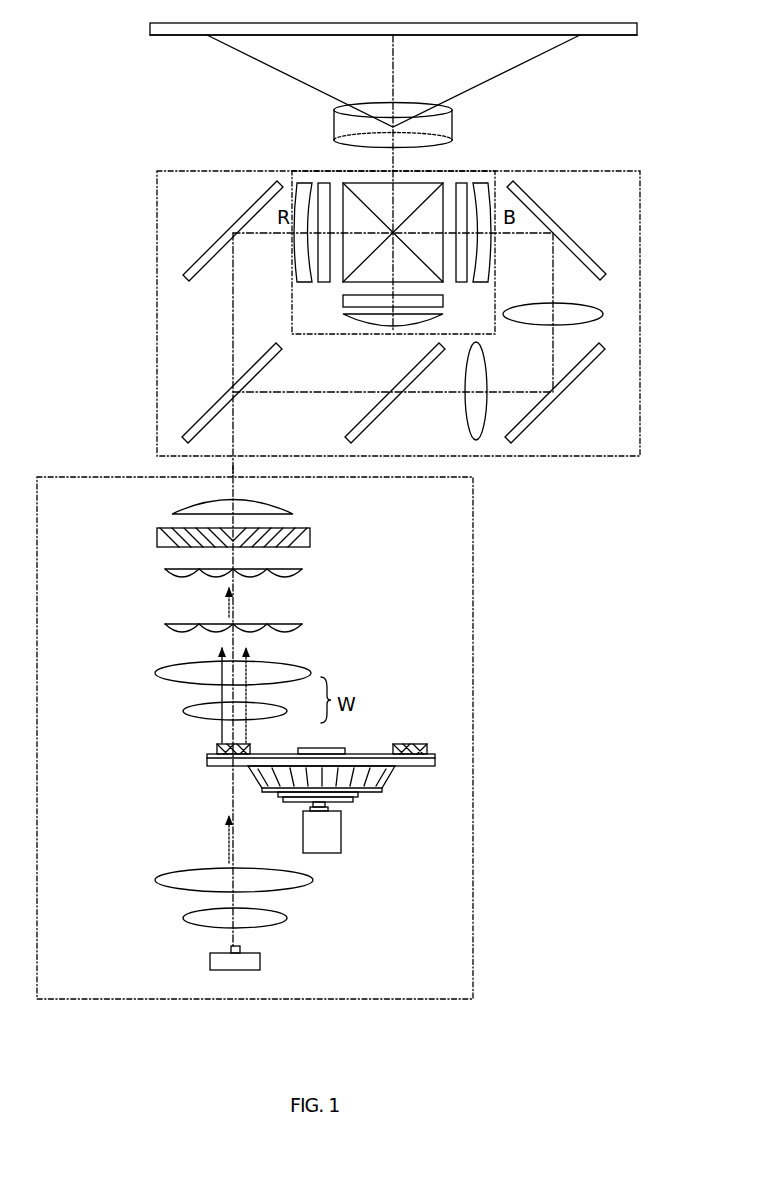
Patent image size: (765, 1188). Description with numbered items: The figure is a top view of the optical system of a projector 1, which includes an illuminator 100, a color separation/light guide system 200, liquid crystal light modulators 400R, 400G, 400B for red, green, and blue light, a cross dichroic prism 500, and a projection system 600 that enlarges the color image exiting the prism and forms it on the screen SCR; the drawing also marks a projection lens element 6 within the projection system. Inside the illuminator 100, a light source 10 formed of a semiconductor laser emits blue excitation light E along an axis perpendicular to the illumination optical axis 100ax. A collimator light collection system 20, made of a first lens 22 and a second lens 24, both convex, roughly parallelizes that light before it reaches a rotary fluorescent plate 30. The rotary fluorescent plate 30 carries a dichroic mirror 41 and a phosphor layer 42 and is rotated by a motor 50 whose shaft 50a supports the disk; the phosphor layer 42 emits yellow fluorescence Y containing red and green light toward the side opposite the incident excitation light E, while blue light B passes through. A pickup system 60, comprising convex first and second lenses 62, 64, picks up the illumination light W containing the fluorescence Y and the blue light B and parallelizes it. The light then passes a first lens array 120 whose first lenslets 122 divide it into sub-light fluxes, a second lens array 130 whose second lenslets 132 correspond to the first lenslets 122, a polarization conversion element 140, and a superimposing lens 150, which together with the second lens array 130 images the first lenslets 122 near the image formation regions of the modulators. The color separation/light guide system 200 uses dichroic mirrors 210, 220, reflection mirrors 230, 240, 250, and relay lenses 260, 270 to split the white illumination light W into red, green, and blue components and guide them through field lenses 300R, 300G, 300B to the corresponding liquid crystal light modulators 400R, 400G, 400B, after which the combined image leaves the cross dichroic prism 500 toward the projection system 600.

The projector 1 is at (106, 108).
The screen SCR is at (613, 37).
The projection lens 6 is at (388, 108).
The projection system 600 is at (336, 124).
The cross dichroic prism 500 is at (437, 181).
The liquid crystal light modulator 400R is at (322, 182).
The liquid crystal light modulator 400G is at (343, 301).
The liquid crystal light modulator 400B is at (465, 182).
The field lens 300R is at (303, 182).
The field lens 300G is at (343, 318).
The field lens 300B is at (480, 182).
The color separation/light guide system 200 is at (593, 457).
The dichroic mirror 210 is at (203, 418).
The dichroic mirror 220 is at (378, 418).
The reflection mirror 230 is at (196, 266).
The reflection mirror 240 is at (570, 380).
The reflection mirror 250 is at (588, 266).
The relay lens 260 is at (465, 406).
The relay lens 270 is at (565, 308).
The illuminator 100 is at (475, 962).
The illumination optical axis 100ax is at (233, 466).
The superimposing lens 150 is at (285, 500).
The polarization conversion element 140 is at (298, 528).
The second lens array 130 is at (300, 570).
The second lenslet 132 is at (170, 573).
The first lens array 120 is at (300, 624).
The first lenslet 122 is at (170, 628).
The illumination light W is at (229, 606).
The fluorescence Y is at (248, 692).
The blue light B is at (225, 722).
The excitation light E is at (229, 835).
The pickup system 60 is at (92, 653).
The second lens 64 is at (165, 670).
The first lens 62 is at (190, 704).
The rotary fluorescent plate 30 is at (372, 713).
The dichroic mirror 41 is at (218, 752).
The phosphor layer 42 is at (218, 746).
The motor 50 is at (342, 837).
The motor shaft 50a is at (342, 812).
The collimator light collection system 20 is at (92, 863).
The second lens 24 is at (165, 877).
The first lens 22 is at (188, 912).
The light source 10 is at (276, 954).